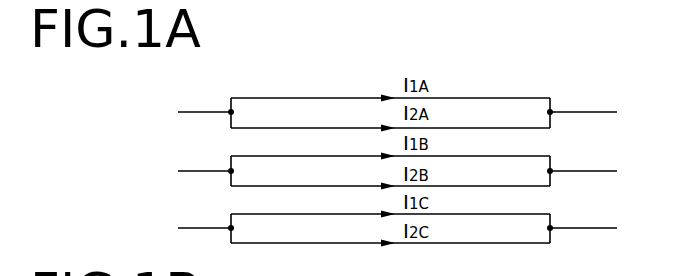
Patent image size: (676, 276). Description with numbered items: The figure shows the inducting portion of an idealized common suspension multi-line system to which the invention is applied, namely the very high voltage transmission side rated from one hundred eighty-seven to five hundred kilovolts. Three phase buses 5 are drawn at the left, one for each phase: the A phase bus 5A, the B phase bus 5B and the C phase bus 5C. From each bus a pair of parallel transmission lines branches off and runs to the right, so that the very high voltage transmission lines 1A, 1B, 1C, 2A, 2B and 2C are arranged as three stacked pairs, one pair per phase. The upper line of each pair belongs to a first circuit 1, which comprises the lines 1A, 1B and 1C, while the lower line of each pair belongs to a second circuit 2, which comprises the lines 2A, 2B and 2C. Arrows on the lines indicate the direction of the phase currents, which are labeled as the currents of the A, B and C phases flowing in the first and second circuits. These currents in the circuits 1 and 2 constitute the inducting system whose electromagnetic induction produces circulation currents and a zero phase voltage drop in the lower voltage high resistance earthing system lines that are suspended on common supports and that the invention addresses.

The first circuit 1 is at (390, 135).
The second circuit 2 is at (390, 173).
The buses 5 is at (176, 152).
The very high voltage transmission line 1A is at (254, 98).
The very high voltage transmission line 1B is at (254, 156).
The very high voltage transmission line 1C is at (252, 214).
The very high voltage transmission line 2A is at (280, 128).
The very high voltage transmission line 2B is at (280, 186).
The very high voltage transmission line 2C is at (277, 243).
The bus 5A is at (190, 111).
The bus 5B is at (190, 170).
The bus 5C is at (190, 227).